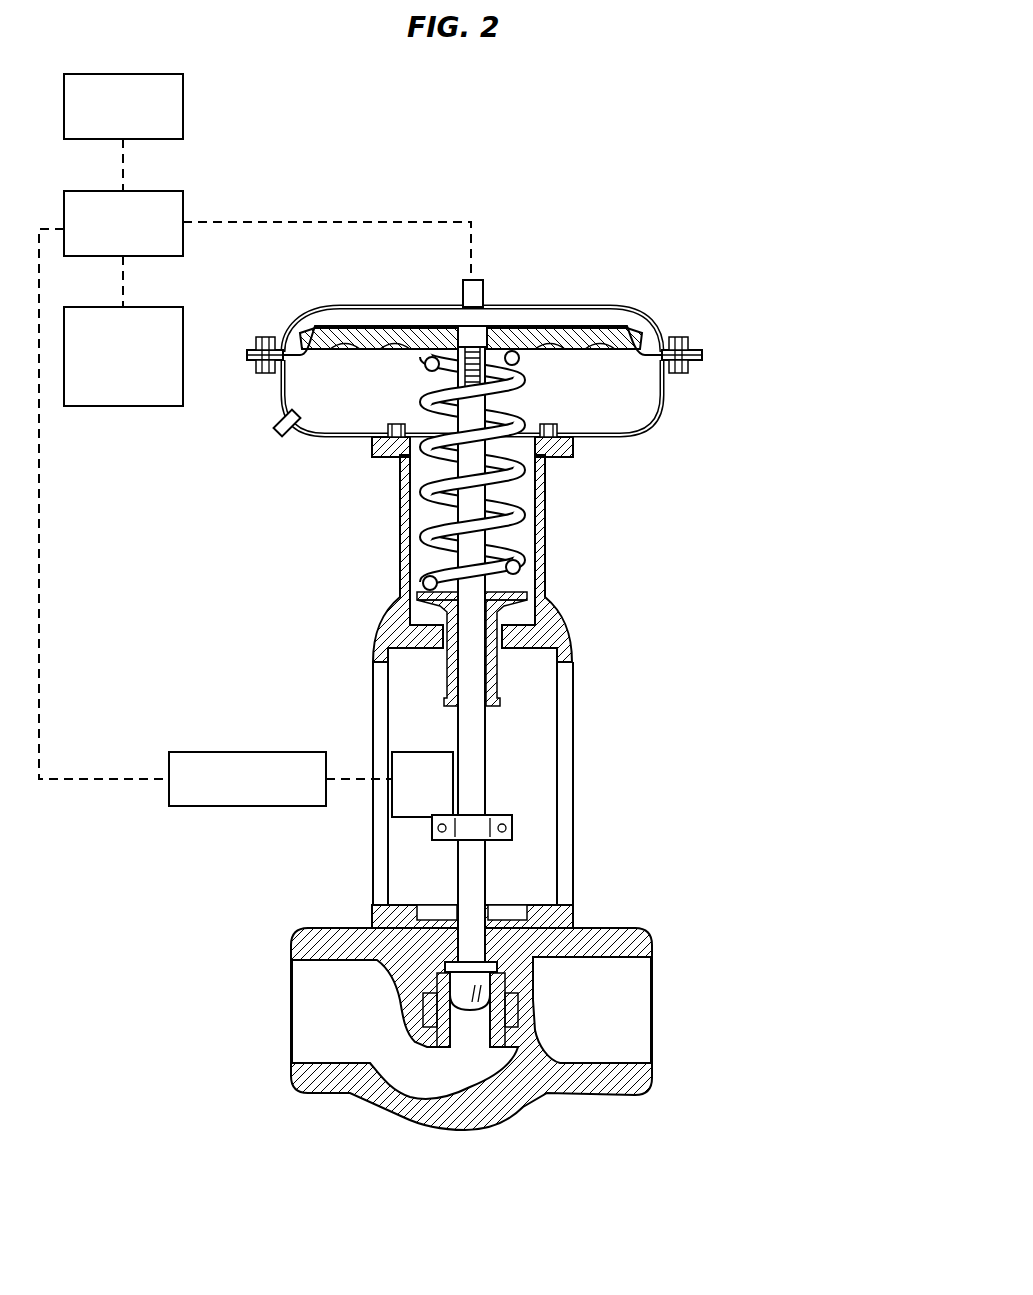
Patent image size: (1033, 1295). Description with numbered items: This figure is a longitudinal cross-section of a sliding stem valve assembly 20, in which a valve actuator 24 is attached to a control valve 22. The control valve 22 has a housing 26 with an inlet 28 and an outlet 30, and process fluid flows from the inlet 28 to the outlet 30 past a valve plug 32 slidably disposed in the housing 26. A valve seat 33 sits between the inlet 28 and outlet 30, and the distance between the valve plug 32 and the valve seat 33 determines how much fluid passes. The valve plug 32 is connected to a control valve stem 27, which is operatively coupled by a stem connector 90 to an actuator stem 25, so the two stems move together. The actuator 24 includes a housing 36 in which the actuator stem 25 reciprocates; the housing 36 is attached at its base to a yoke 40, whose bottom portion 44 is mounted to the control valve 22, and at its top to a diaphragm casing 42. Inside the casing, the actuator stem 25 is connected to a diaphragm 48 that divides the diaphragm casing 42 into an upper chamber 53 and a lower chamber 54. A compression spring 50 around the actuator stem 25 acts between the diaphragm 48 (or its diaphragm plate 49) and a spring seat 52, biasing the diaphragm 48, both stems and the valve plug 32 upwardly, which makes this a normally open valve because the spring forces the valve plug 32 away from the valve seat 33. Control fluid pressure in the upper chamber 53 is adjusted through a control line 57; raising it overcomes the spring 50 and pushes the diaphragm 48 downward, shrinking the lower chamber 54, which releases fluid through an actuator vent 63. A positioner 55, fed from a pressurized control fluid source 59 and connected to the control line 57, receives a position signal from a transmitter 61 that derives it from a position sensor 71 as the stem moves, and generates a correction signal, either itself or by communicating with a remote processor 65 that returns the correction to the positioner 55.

The sliding stem valve assembly 20 is at (777, 452).
The control valve 22 is at (666, 862).
The valve actuator 24 is at (713, 317).
The actuator stem 25 is at (478, 500).
The housing 26 is at (600, 928).
The control valve stem 27 is at (468, 946).
The inlet 28 is at (290, 1015).
The outlet 30 is at (654, 1021).
The valve plug 32 is at (474, 1012).
The valve seat 33 is at (510, 982).
The housing 36 is at (547, 574).
The yoke 40 is at (575, 692).
The diaphragm casing 42 is at (560, 306).
The bottom portion 44 is at (504, 902).
The diaphragm 48 is at (628, 330).
The diaphragm plate 49 is at (521, 327).
The spring 50 is at (473, 458).
The spring seat 52 is at (528, 596).
The upper chamber 53 is at (350, 317).
The lower chamber 54 is at (350, 423).
The positioner 55 is at (184, 206).
The control line 57 is at (463, 282).
The pressurized control fluid source 59 is at (184, 358).
The transmitter 61 is at (248, 752).
The actuator vent 63 is at (279, 431).
The remote processor 65 is at (184, 90).
The position sensor 71 is at (401, 818).
The stem connector 90 is at (500, 813).